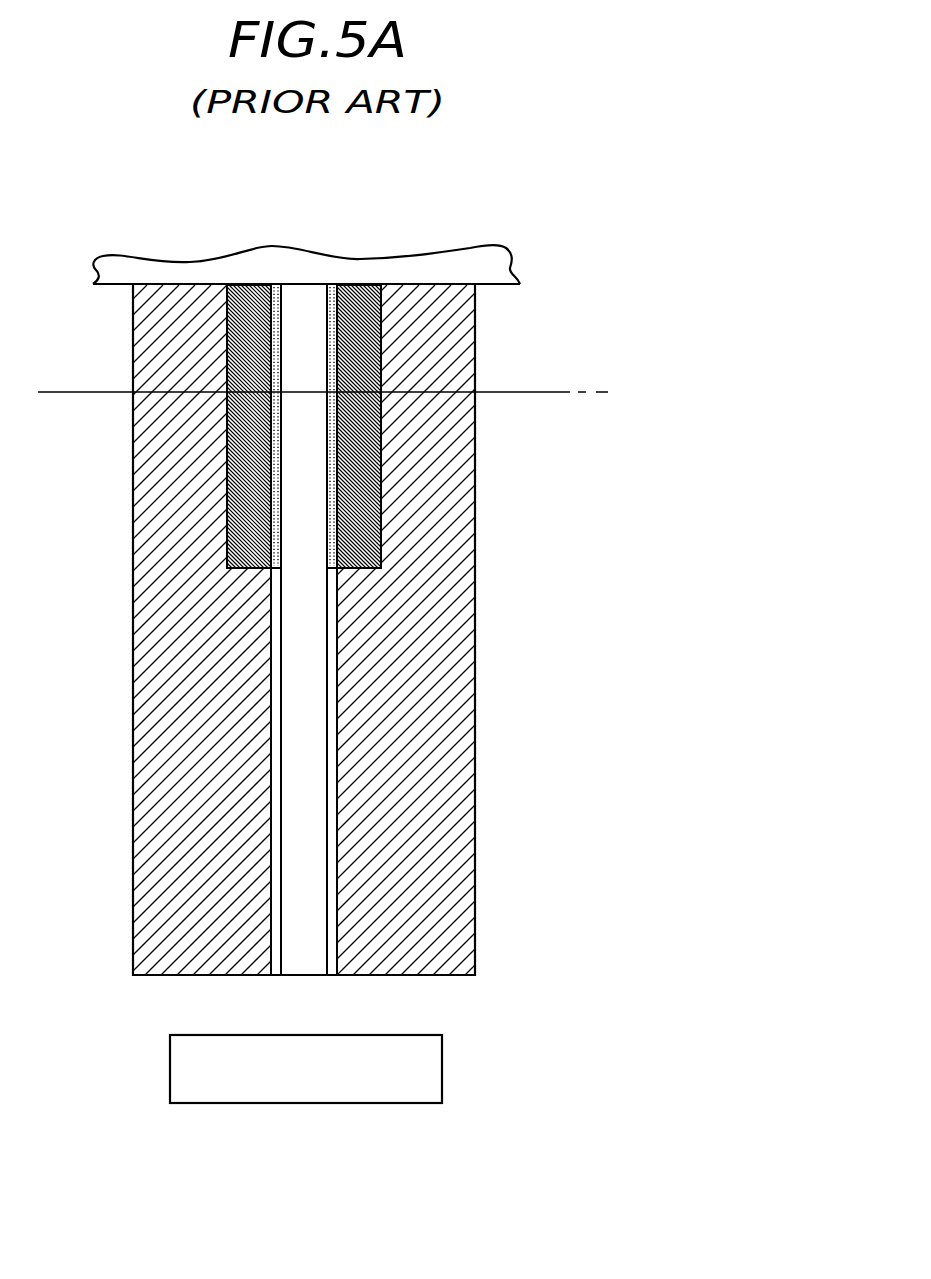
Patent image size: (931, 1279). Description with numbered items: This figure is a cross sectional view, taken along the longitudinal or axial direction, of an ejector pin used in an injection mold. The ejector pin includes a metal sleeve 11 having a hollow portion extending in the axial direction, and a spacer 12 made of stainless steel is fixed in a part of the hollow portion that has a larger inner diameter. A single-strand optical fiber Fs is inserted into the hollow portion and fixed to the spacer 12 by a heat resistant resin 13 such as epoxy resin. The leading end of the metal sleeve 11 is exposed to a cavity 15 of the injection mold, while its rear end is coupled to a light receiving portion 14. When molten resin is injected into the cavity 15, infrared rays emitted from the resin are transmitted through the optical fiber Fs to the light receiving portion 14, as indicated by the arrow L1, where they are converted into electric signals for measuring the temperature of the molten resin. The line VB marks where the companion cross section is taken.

The metal sleeve 11 is at (438, 467).
The spacer 12 is at (365, 485).
The heat resistant resin 13 is at (330, 525).
The light receiving portion 14 is at (418, 1063).
The cavity 15 is at (502, 262).
The optical fiber Fs is at (302, 620).
The arrow L1 is at (305, 987).
The line VB- VB is at (93, 394).